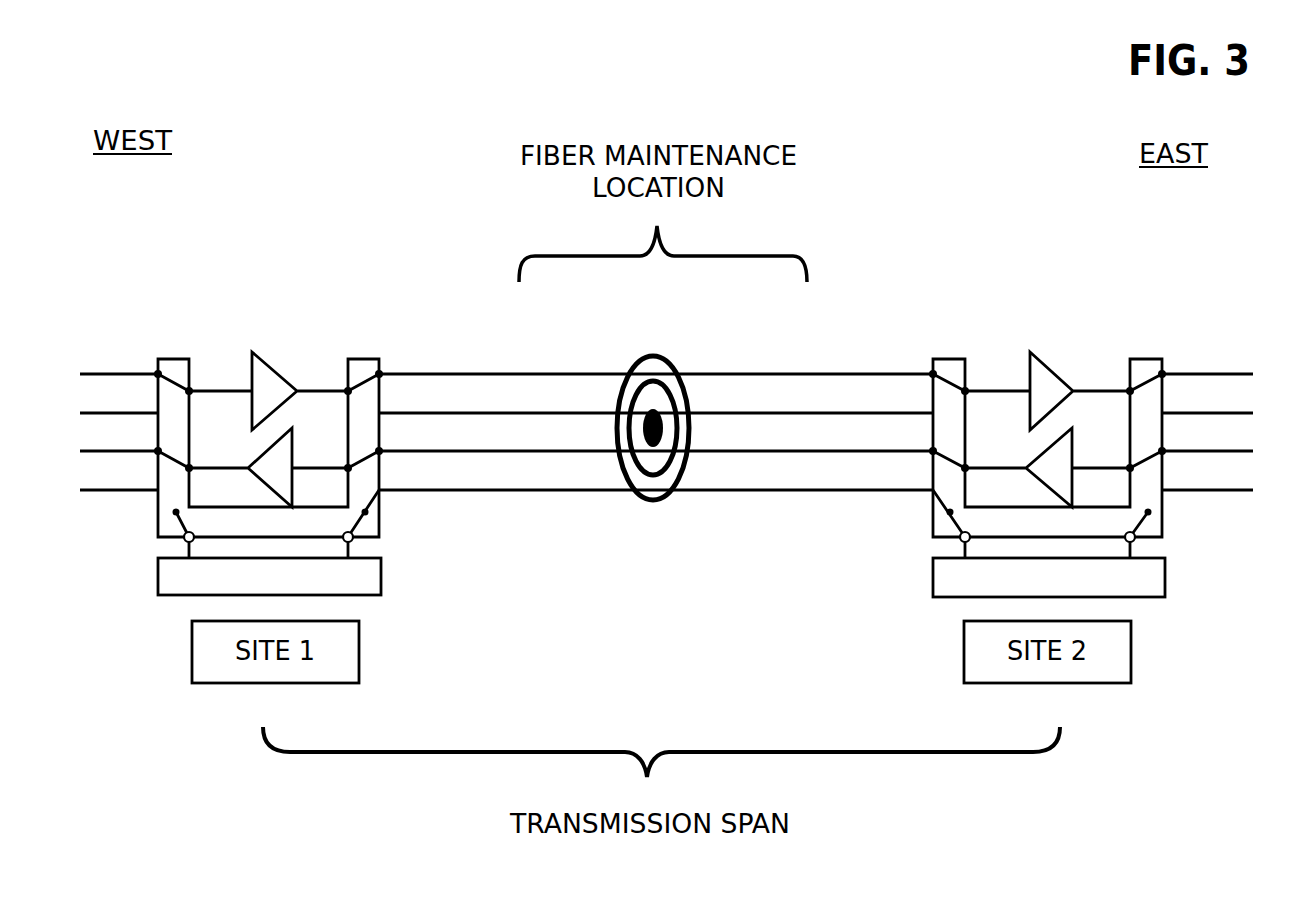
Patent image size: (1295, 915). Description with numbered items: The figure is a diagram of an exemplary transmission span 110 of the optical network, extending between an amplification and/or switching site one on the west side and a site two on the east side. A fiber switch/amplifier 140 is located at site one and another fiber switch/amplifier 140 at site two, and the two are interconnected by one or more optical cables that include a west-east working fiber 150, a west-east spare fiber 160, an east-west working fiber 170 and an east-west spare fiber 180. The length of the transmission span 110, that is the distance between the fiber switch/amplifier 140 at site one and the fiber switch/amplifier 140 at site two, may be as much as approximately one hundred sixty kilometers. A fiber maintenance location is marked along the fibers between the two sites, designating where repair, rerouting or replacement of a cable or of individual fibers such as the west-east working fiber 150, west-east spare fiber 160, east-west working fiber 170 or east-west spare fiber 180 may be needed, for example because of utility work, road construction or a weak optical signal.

The transmission span 110 is at (146, 67).
The fiber switch/amplifier 140 is at (1092, 298).
The west-east working fiber 150 is at (453, 374).
The west-east spare fiber 160 is at (858, 413).
The east-west working fiber 170 is at (448, 451).
The east-west spare fiber 180 is at (857, 490).